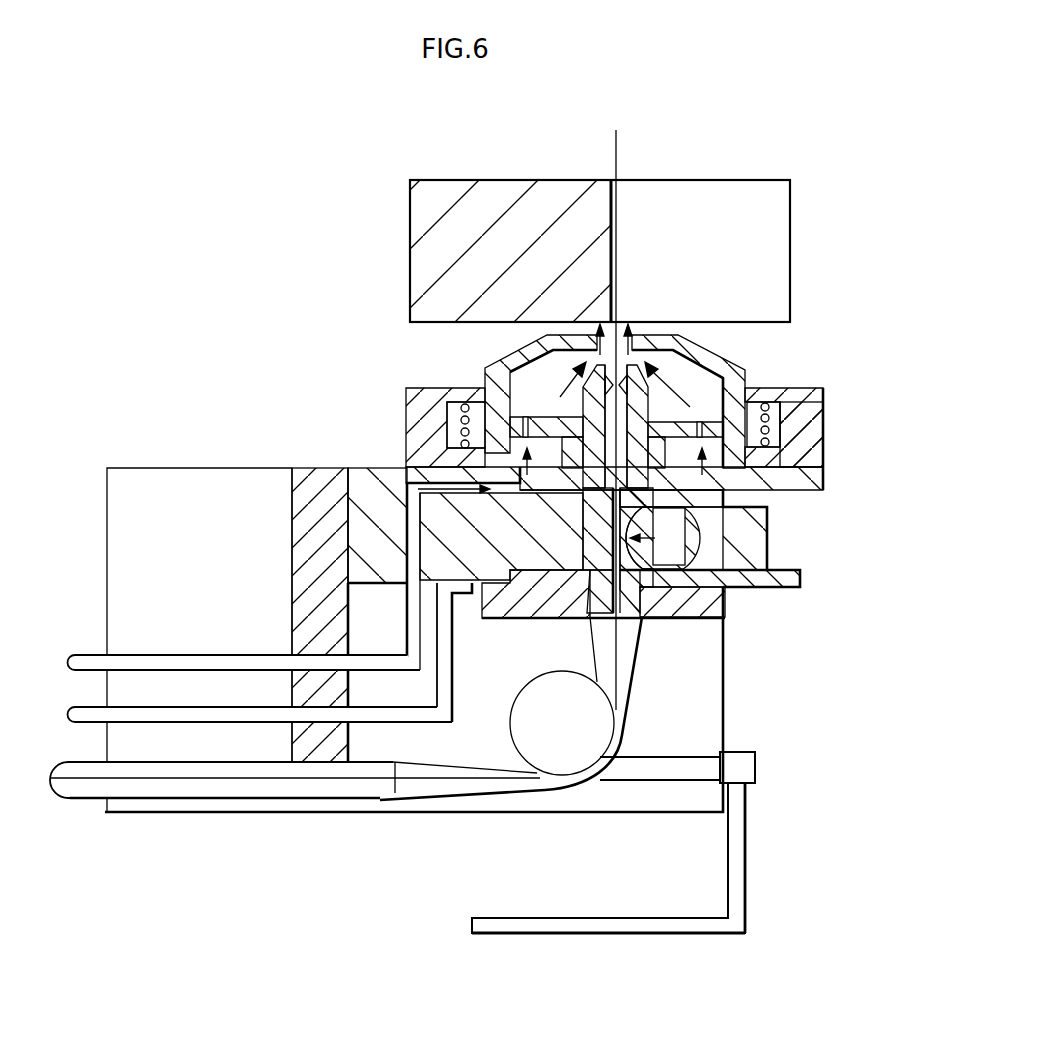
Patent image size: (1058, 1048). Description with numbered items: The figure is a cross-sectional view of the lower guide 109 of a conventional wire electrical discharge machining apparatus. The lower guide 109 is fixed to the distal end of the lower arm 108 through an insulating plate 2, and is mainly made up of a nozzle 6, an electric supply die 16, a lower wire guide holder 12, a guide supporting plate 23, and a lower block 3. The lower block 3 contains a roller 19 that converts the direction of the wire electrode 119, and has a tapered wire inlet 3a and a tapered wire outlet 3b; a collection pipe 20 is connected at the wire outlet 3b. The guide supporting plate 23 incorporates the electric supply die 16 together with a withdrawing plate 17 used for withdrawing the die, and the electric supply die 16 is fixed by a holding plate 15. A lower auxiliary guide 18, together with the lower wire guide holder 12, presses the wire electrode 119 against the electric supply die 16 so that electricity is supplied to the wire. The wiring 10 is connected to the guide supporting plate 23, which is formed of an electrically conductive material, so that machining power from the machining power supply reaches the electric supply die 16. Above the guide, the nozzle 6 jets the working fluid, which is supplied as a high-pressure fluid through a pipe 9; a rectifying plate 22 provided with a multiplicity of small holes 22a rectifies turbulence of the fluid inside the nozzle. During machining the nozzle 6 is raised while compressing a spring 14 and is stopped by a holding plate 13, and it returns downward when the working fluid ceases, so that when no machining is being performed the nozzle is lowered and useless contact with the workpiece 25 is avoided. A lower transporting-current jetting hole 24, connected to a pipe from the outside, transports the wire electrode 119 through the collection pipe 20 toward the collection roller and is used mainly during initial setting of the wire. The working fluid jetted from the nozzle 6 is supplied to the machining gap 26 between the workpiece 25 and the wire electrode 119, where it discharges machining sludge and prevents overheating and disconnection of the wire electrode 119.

The insulating plate 2 is at (318, 478).
The lower block 3 is at (676, 800).
The wire inlet 3a is at (622, 672).
The wire outlet 3b is at (413, 787).
The nozzle 6 is at (712, 350).
The pipe 9 is at (133, 655).
The wiring 10 is at (133, 722).
The lower wire guide holder 12 is at (580, 402).
The holding plate 13 is at (820, 390).
The spring 14 is at (782, 445).
The holding plate 15 is at (767, 520).
The electric supply die 16 is at (700, 557).
The withdrawing plate 17 is at (790, 578).
The lower auxiliary guide 18 is at (640, 604).
The roller 19 is at (566, 752).
The collection pipe 20 is at (238, 798).
The rectifying plate 22 is at (478, 395).
The small holes 22a is at (715, 425).
The guide supporting plate 23 is at (430, 555).
The lower transporting-current jetting hole 24 is at (632, 772).
The workpiece 25 is at (527, 180).
The machining gap 26 is at (611, 180).
The lower arm 108 is at (153, 478).
The lower guide 109 is at (738, 659).
The wire electrode 119 is at (188, 778).